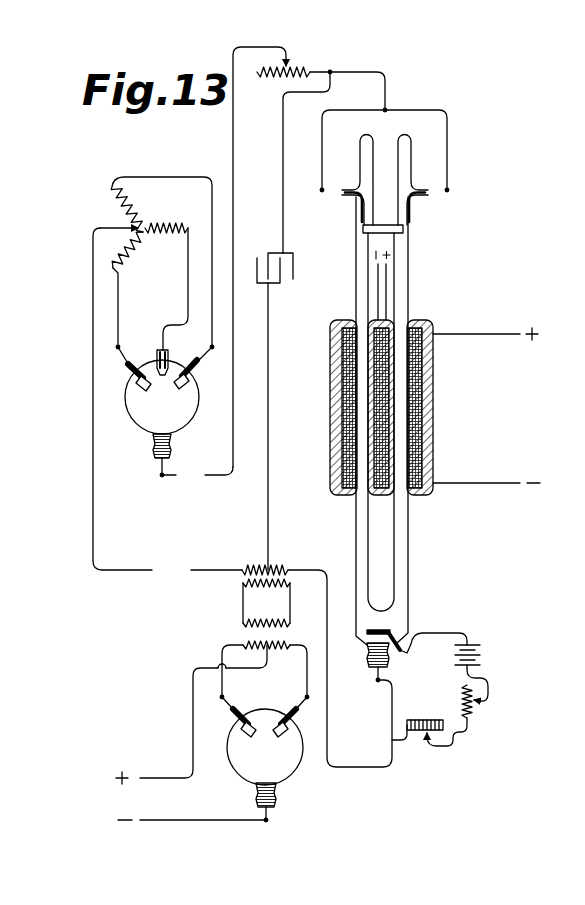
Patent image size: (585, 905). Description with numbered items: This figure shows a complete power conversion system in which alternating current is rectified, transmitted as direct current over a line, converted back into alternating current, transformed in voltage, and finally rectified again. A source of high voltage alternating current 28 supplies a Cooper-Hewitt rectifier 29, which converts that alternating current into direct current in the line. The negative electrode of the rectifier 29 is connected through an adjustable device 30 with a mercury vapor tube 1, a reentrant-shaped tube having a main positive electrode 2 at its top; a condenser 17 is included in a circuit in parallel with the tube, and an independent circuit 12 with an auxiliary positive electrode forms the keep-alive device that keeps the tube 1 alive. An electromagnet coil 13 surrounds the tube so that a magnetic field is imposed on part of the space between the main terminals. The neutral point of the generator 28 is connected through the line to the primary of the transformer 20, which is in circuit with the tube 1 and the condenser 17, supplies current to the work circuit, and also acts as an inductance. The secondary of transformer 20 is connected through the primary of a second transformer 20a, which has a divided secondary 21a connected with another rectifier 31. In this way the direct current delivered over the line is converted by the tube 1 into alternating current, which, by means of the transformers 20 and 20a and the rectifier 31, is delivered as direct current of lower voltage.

The mercury vapor tube 1 is at (409, 285).
The main positive electrode 2 is at (404, 229).
The independent circuit 12 is at (441, 718).
The magnet coil 13 is at (433, 416).
The condenser 17 is at (288, 411).
The transformer 20 is at (268, 561).
The transformer 20a is at (282, 609).
The divided secondary 21a is at (211, 712).
The source of high voltage alternating current 28 is at (167, 377).
The Cooper-Hewitt rectifier 29 is at (174, 414).
The adjustable device 30 is at (309, 256).
The rectifier 31 is at (213, 758).